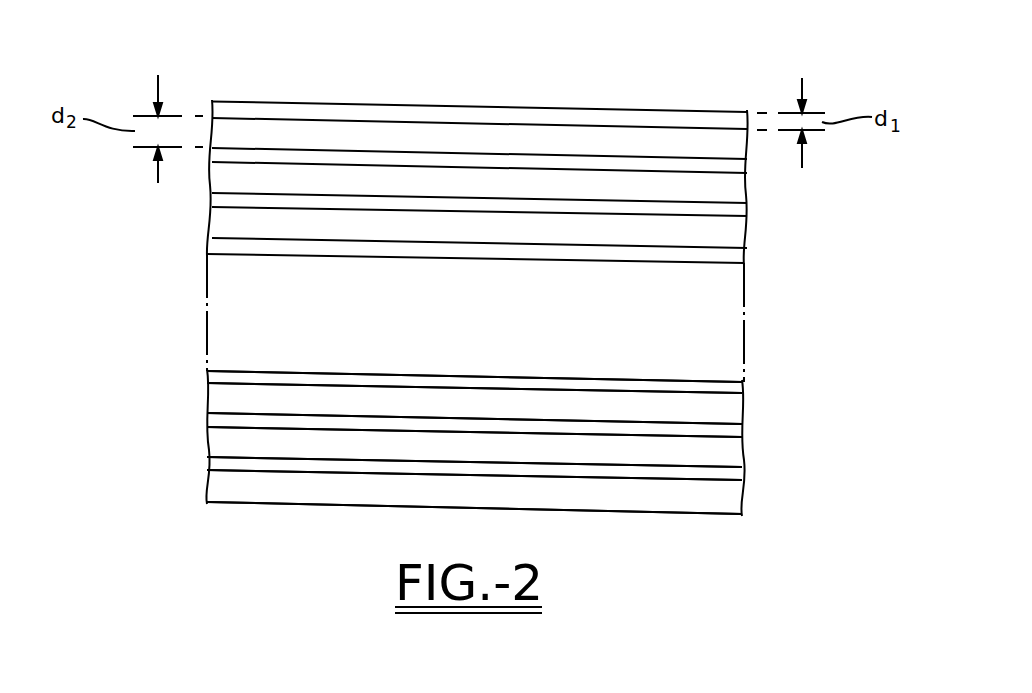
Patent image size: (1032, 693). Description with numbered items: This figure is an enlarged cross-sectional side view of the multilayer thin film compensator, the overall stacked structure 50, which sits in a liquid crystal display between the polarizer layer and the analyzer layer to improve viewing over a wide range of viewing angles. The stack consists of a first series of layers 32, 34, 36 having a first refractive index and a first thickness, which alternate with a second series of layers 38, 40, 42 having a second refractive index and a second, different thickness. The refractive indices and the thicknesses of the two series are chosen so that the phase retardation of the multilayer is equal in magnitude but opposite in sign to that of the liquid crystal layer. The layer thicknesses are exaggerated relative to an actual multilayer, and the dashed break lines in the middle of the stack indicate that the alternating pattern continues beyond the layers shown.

The multilayer optical structure 50 is at (432, 102).
The layer of the first series 32 is at (738, 476).
The layer of the first series 34 is at (740, 433).
The layer of the first series 36 is at (740, 386).
The layer of the second series 38 is at (210, 490).
The layer of the second series 40 is at (210, 445).
The layer of the second series 42 is at (207, 395).